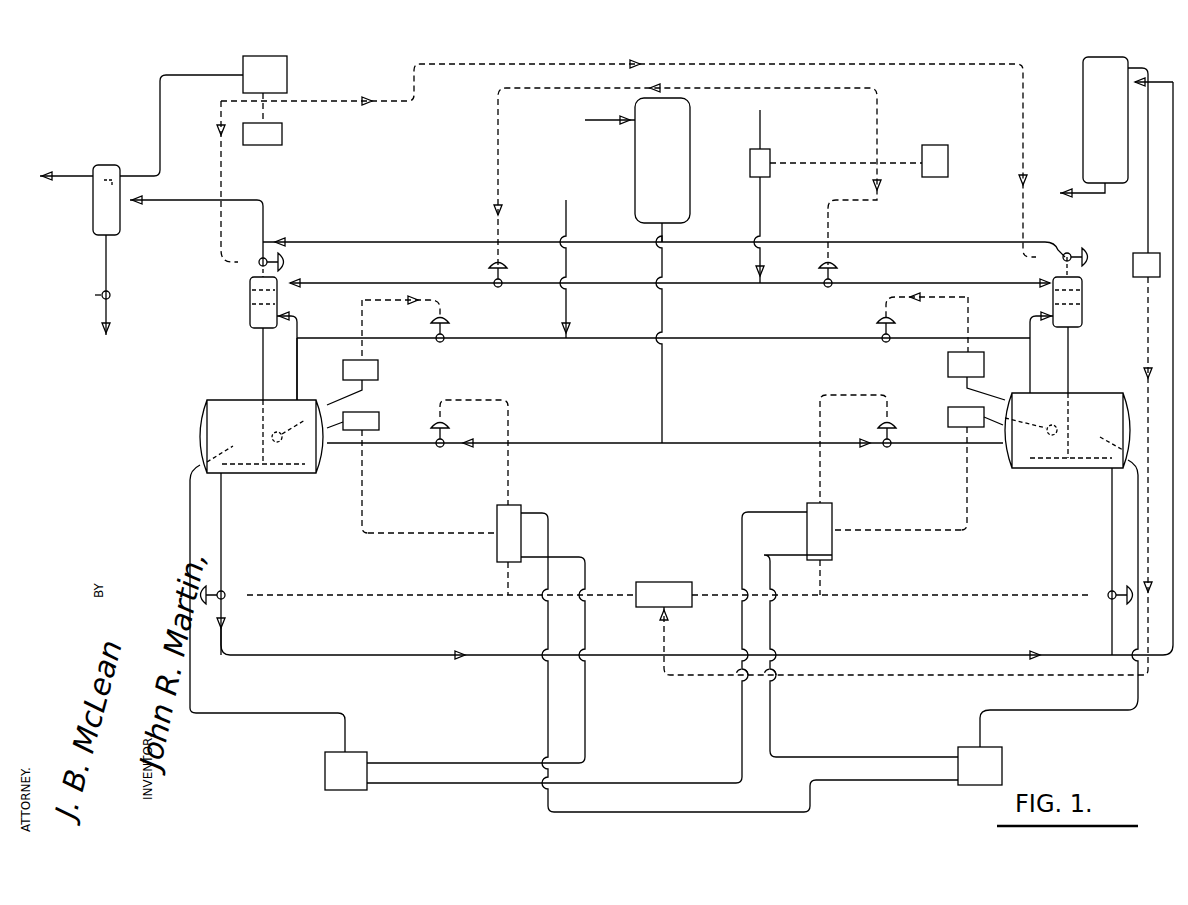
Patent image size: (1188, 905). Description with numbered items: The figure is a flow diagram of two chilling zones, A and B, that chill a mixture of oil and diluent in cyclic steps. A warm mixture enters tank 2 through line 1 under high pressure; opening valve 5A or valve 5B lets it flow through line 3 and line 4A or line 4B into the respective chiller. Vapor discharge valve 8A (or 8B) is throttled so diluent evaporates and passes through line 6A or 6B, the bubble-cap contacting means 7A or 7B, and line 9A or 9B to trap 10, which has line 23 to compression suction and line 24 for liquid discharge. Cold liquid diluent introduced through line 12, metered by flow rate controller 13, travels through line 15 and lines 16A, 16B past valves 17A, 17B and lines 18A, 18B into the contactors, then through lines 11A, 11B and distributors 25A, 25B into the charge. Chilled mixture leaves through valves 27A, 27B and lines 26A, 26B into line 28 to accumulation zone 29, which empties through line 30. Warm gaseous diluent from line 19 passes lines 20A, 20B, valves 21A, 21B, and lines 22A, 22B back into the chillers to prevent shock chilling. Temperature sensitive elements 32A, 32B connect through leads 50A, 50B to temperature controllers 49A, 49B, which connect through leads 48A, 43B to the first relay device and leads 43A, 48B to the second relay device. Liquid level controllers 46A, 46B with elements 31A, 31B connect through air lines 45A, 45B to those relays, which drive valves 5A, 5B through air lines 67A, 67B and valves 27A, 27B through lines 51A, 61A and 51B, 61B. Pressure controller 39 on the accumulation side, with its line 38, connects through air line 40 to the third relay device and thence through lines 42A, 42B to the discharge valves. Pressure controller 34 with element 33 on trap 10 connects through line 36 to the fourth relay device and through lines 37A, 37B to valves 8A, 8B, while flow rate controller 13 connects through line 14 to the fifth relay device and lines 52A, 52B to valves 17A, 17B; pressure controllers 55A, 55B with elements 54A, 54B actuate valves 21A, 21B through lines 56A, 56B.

The line 1 is at (612, 120).
The tank 2 is at (662, 170).
The line 3 is at (662, 380).
The line 4A is at (390, 443).
The line 4B is at (752, 443).
The valve 5A is at (450, 420).
The valve 5B is at (878, 420).
The line 6A is at (297, 355).
The line 6B is at (1030, 365).
The contacting means 7A is at (250, 313).
The contacting means 7B is at (1085, 312).
The vapor discharge valve 8A is at (250, 253).
The vapor discharge valve 8B is at (1040, 258).
The line 9A is at (263, 205).
The line 9B is at (390, 242).
The trap 10 is at (106, 200).
The line 11A is at (262, 360).
The line 11B is at (1068, 350).
The line 12 is at (758, 122).
The flow rate controller 13 is at (782, 140).
The line 14 is at (820, 163).
The line 15 is at (758, 203).
The line 16A is at (618, 283).
The line 16B is at (788, 283).
The valve 17A is at (490, 264).
The valve 17B is at (838, 264).
The line 18A is at (342, 283).
The line 18B is at (948, 283).
The line 19 is at (565, 222).
The line 20A is at (535, 338).
The line 20B is at (740, 338).
The valve 21A is at (448, 314).
The valve 21B is at (878, 314).
The line 22A is at (330, 338).
The line 22B is at (1000, 338).
The line 23 is at (62, 180).
The line 24 is at (105, 264).
The distributor 25A is at (290, 466).
The distributor 25B is at (1077, 465).
The line 26A is at (221, 535).
The line 26B is at (1112, 552).
The valve 27A is at (240, 585).
The valve 27B is at (1090, 600).
The line 28 is at (1172, 76).
The accumulation zone 29 is at (1105, 120).
The line 30 is at (1092, 184).
The liquid level sensitive element 31A is at (287, 424).
The liquid level sensitive element 31B is at (1048, 412).
The temperature sensitive element 32A is at (196, 470).
The temperature sensitive element 32B is at (1059, 579).
The pressure sensitive element 33 is at (158, 95).
The pressure controller 34 is at (297, 62).
The line 36 is at (266, 110).
The line 37A is at (219, 176).
The line 37B is at (396, 101).
The pressure sensing line 38 is at (1147, 200).
The pressure controller 39 is at (1130, 222).
The air line 40 is at (1146, 353).
The line 42A is at (608, 595).
The line 42B is at (705, 595).
The lead 43A is at (740, 512).
The lead 43B is at (547, 713).
The air line 45A is at (362, 532).
The air line 45B is at (967, 527).
The liquid level controller 46A is at (398, 385).
The liquid level controller 46B is at (935, 383).
The lead 48A is at (586, 727).
The lead 48B is at (772, 632).
The temperature controller 49A is at (305, 762).
The temperature controller 49B is at (1020, 750).
The lead 50A is at (290, 713).
The lead 50B is at (1070, 710).
The air line 51A is at (506, 578).
The air line 51B is at (820, 573).
The line 52A is at (497, 147).
The line 52B is at (830, 212).
The pressure sensitive element 54A is at (340, 392).
The pressure sensitive element 54B is at (987, 400).
The pressure controller 55A is at (393, 355).
The pressure controller 55B is at (935, 352).
The line 56A is at (364, 300).
The line 56B is at (968, 297).
The air line 61A is at (370, 595).
The air line 61B is at (953, 595).
The air line 67A is at (506, 466).
The air line 67B is at (820, 466).